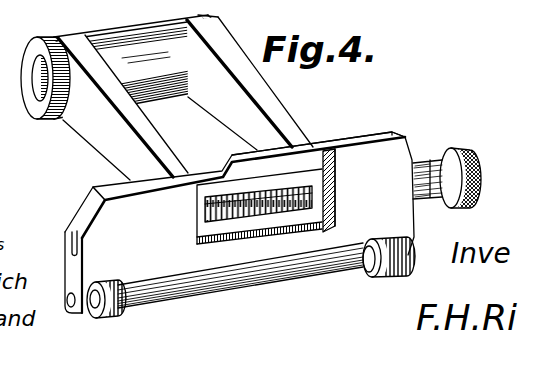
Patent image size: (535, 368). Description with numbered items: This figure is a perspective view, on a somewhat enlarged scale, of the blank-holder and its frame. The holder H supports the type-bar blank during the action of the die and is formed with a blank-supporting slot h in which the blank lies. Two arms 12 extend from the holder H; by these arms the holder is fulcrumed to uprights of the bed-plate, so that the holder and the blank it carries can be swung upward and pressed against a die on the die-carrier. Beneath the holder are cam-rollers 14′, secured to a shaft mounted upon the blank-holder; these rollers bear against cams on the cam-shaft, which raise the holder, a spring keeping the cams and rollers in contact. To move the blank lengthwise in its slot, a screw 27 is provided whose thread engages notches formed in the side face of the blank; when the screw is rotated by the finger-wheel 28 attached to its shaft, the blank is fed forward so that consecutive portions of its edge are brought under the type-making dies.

The arms 12 is at (147, 134).
The blank-supporting slot h is at (348, 145).
The screw 27 is at (264, 193).
The holder H is at (374, 196).
The finger-wheel 28 is at (465, 149).
The cam-rollers 14′ is at (118, 313).